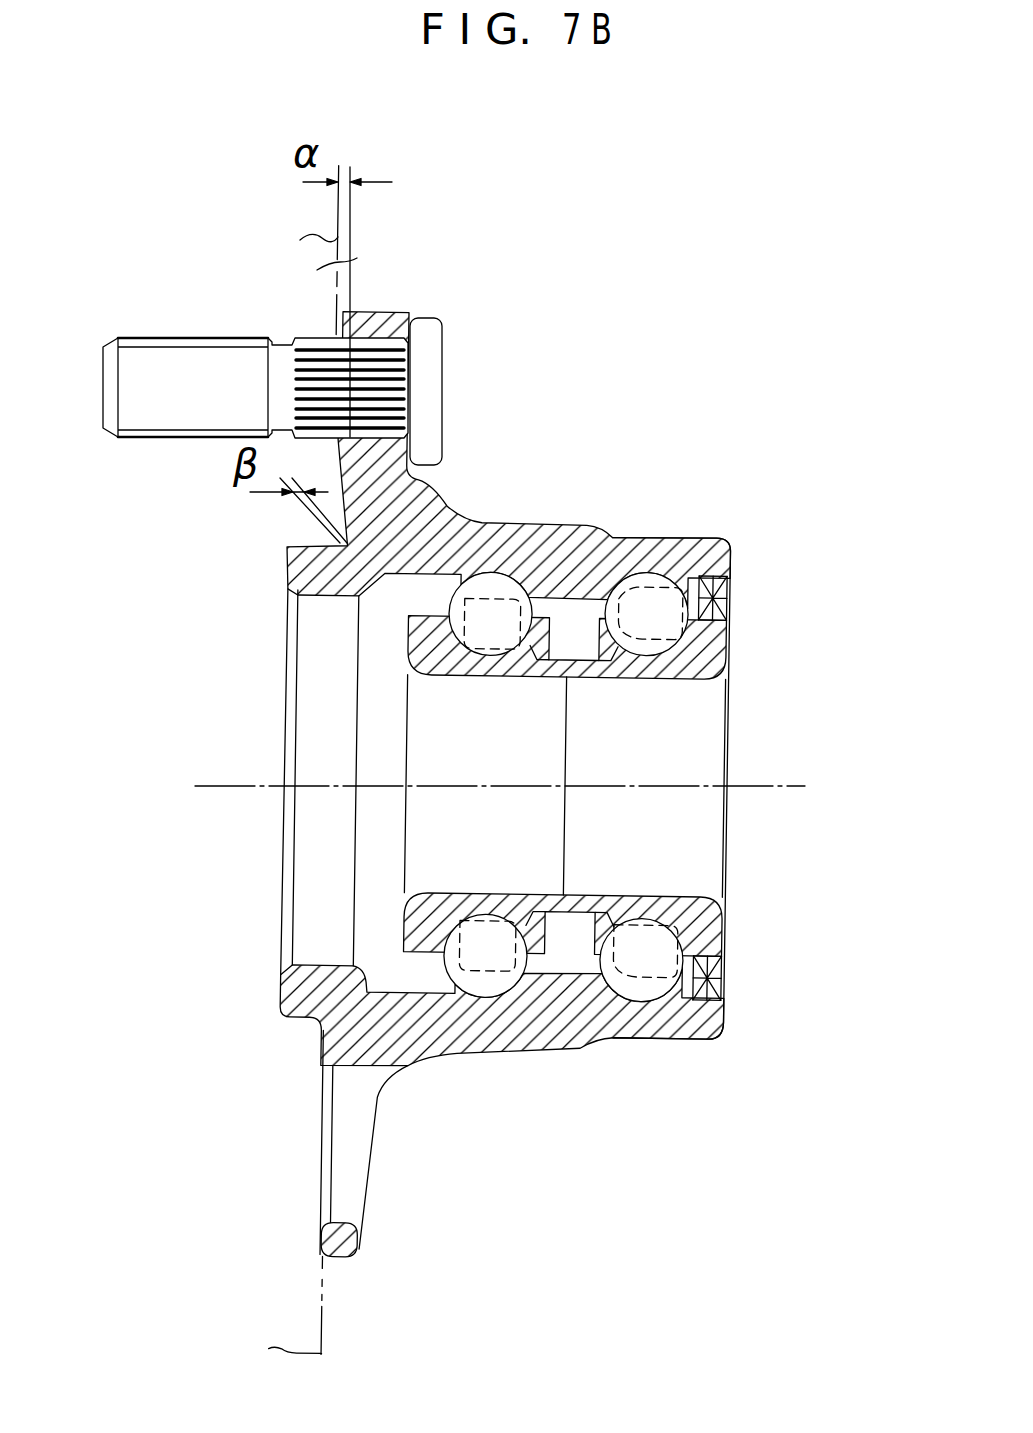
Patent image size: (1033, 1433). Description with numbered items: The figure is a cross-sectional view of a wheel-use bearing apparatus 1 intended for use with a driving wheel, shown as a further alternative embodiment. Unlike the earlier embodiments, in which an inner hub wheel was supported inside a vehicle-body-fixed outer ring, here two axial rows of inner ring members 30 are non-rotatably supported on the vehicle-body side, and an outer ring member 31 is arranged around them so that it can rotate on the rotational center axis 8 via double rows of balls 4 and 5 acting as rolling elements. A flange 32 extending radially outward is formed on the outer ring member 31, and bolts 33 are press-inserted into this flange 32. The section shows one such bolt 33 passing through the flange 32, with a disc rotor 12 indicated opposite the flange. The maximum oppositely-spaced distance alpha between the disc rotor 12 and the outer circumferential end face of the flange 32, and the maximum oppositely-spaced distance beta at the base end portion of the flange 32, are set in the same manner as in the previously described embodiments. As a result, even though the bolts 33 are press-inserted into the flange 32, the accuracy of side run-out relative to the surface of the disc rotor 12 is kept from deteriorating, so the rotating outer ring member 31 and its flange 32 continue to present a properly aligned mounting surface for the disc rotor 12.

The wheel-use bearing apparatus 1 is at (650, 335).
The balls 4 is at (513, 578).
The balls 5 is at (645, 580).
The rotational center axis 8 is at (230, 785).
The disc rotor 12 is at (357, 258).
The inner ring members 30 is at (500, 675).
The outer ring member 31 is at (578, 548).
The flange 32 is at (403, 311).
The bolts 33 is at (428, 404).